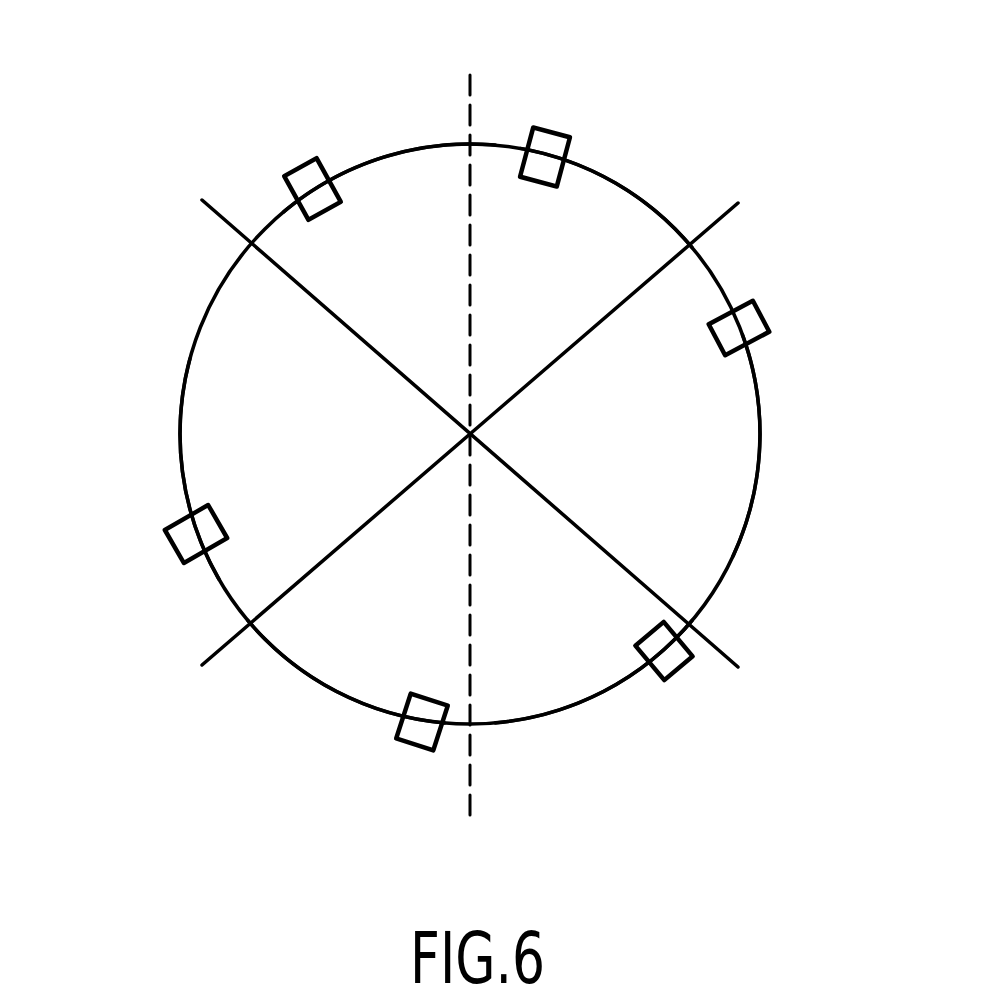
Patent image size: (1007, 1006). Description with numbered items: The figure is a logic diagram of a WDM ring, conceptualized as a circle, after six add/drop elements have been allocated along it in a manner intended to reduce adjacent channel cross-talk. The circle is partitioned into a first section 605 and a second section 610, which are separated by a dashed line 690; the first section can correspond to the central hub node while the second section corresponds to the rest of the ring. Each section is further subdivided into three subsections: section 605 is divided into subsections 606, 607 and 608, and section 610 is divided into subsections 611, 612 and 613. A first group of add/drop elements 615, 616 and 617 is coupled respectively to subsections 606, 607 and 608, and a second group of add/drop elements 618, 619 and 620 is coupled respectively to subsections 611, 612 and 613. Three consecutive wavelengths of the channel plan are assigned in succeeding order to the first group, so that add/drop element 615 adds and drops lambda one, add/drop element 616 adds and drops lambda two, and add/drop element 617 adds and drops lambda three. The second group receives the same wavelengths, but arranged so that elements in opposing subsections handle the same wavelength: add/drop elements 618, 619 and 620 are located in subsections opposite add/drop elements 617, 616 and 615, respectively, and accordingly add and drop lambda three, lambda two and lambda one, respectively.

The first ring section 605 is at (680, 217).
The subsection 606 is at (610, 180).
The subsection 607 is at (760, 473).
The subsection 608 is at (543, 720).
The second ring section 610 is at (200, 318).
The subsection 611 is at (400, 152).
The subsection 612 is at (178, 402).
The subsection 613 is at (332, 692).
The add/drop element 615 is at (553, 132).
The add/drop element 616 is at (767, 315).
The add/drop element 617 is at (673, 682).
The add/drop element 618 is at (298, 167).
The add/drop element 619 is at (170, 547).
The add/drop element 620 is at (413, 750).
The dashed line 690 is at (472, 90).